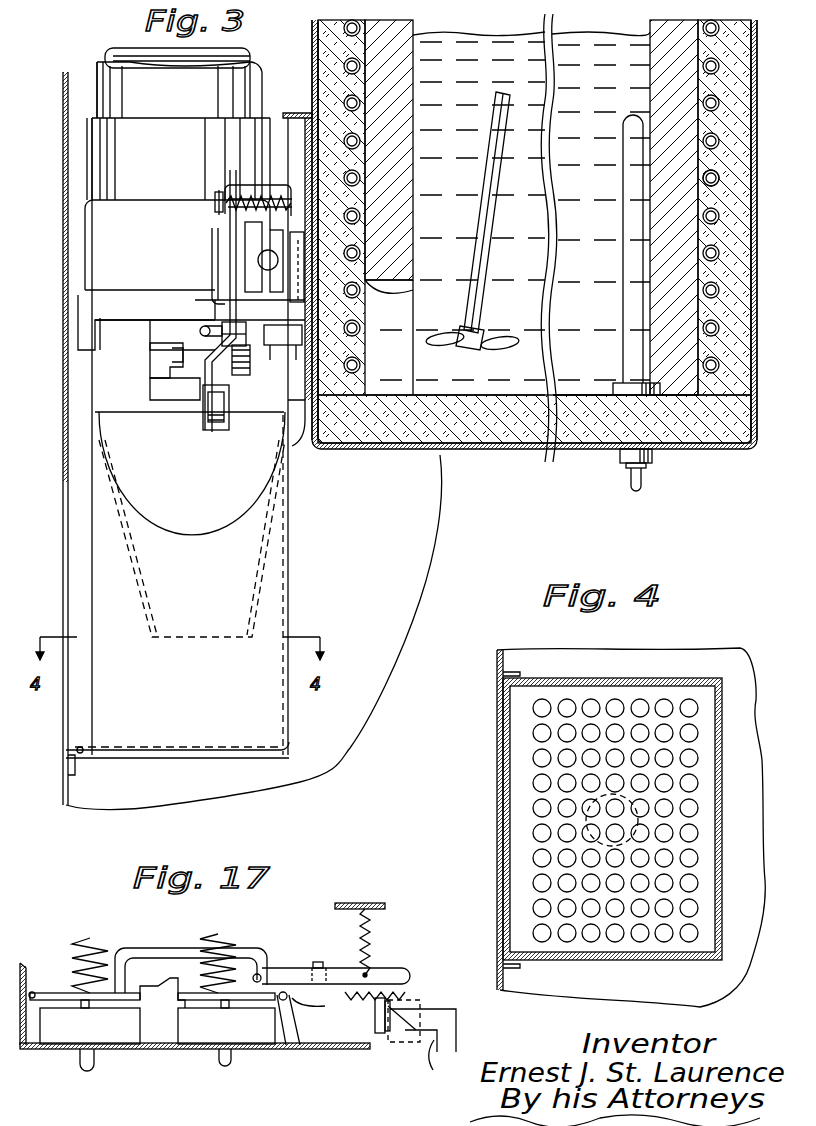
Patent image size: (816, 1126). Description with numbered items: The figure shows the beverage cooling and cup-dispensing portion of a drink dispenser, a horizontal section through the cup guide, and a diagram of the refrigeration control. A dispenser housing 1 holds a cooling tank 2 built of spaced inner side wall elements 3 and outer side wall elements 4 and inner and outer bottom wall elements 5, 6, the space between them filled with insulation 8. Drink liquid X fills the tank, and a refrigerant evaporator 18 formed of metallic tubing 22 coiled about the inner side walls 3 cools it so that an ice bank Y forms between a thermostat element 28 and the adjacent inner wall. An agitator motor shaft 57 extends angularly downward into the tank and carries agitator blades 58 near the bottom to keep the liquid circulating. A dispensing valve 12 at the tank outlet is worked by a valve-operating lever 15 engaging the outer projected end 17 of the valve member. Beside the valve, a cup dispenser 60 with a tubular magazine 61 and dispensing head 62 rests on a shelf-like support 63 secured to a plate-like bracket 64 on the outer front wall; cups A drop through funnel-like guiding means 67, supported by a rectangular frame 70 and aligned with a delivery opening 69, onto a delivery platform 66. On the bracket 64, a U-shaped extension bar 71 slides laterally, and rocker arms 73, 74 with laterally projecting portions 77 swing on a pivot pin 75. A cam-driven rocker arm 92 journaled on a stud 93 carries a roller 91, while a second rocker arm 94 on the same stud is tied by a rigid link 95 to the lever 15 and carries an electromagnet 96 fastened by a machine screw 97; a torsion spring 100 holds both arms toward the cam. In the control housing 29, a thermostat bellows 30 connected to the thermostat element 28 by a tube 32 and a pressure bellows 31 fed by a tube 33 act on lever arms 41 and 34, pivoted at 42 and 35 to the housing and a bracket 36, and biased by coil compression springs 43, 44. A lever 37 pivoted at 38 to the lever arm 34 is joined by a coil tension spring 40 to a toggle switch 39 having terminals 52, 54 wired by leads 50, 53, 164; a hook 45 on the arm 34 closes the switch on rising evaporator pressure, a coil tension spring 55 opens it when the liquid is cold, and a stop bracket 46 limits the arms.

In FIG. 3, the dispenser housing 1 is at (58, 250).
In FIG. 4, the dispenser housing 1 is at (494, 661).
In FIG. 3, the cooling tank 2 is at (758, 452).
In FIG. 3, the inner side wall elements 3 is at (370, 200).
In FIG. 3, the outer side wall elements 4 is at (312, 40).
In FIG. 3, the inner bottom wall element 5 is at (556, 395).
In FIG. 3, the outer bottom wall element 6 is at (412, 450).
In FIG. 3, the insulation 8 is at (342, 87).
In FIG. 3, the dispensing valve 12 is at (172, 385).
In FIG. 3, the valve-operating lever 15 is at (160, 356).
In FIG. 3, the outer projected end of valve member 17 is at (172, 365).
In FIG. 3, the refrigerant evaporator 18 is at (722, 182).
In FIG. 3, the metallic tubing 22 is at (360, 26).
In FIG. 3, the thermostat element 28 is at (624, 248).
In FIG. 17, the control housing 29 is at (330, 1050).
In FIG. 17, the thermostat bellows 30 is at (83, 1037).
In FIG. 17, the pressure bellows 31 is at (222, 1039).
In FIG. 3, the tube 32 is at (630, 482).
In FIG. 17, the tube 32 is at (84, 1066).
In FIG. 17, the tube 33 is at (224, 1064).
In FIG. 17, the lever arm 34 is at (195, 990).
In FIG. 17, the pivot 35 is at (300, 1004).
In FIG. 17, the bracket 36 is at (291, 1062).
In FIG. 17, the lever 37 is at (150, 955).
In FIG. 17, the pivot 38 is at (263, 972).
In FIG. 17, the toggle switch 39 is at (406, 995).
In FIG. 17, the coil tension spring 40 is at (386, 968).
In FIG. 17, the lever arm 41 is at (60, 990).
In FIG. 17, the pivot 42 is at (34, 992).
In FIG. 17, the coil compression spring 43 is at (90, 944).
In FIG. 17, the coil compression spring 44 is at (220, 940).
In FIG. 17, the hook 45 is at (318, 962).
In FIG. 17, the stop bracket 46 is at (170, 1007).
In FIG. 17, the lead 50 is at (434, 1062).
In FIG. 17, the terminal 52 is at (380, 1040).
In FIG. 17, the lead 53 is at (405, 1046).
In FIG. 17, the terminal 54 is at (386, 1006).
In FIG. 17, the coil tension spring 55 is at (370, 936).
In FIG. 3, the motor shaft 57 is at (490, 192).
In FIG. 3, the agitator blades 58 is at (488, 345).
In FIG. 3, the cup dispenser 60 is at (104, 100).
In FIG. 3, the tubular magazine 61 is at (148, 86).
In FIG. 3, the dispensing head 62 is at (100, 212).
In FIG. 3, the shelf-like support 63 is at (98, 308).
In FIG. 3, the plate-like bracket 64 is at (298, 428).
In FIG. 3, the delivery platform 66 is at (178, 748).
In FIG. 4, the delivery platform 66 is at (556, 796).
In FIG. 3, the funnel-like guiding means 67 is at (200, 487).
In FIG. 3, the delivery opening 69 is at (66, 601).
In FIG. 4, the delivery opening 69 is at (500, 762).
In FIG. 3, the rectangular frame 70 is at (210, 617).
In FIG. 4, the rectangular frame 70 is at (634, 680).
In FIG. 3, the extension bar 71 is at (298, 238).
In FIG. 3, the rocker arm 73 is at (385, 314).
In FIG. 3, the rocker arm 74 is at (266, 288).
In FIG. 3, the pivot pin 75 is at (280, 372).
In FIG. 3, the laterally projecting portions 77 is at (296, 262).
In FIG. 3, the roller 91 is at (225, 325).
In FIG. 3, the rocker arm 92 is at (230, 237).
In FIG. 3, the stud 93 is at (213, 207).
In FIG. 3, the second rocker arm 94 is at (212, 262).
In FIG. 3, the rigid link 95 is at (200, 330).
In FIG. 3, the electromagnet 96 is at (216, 428).
In FIG. 3, the machine screw 97 is at (205, 414).
In FIG. 3, the torsion spring 100 is at (280, 195).
In FIG. 17, the lead 164 is at (456, 1020).
In FIG. 3, the cups A is at (150, 57).
In FIG. 3, the drink liquid X is at (465, 140).
In FIG. 3, the ice bank Y is at (402, 228).